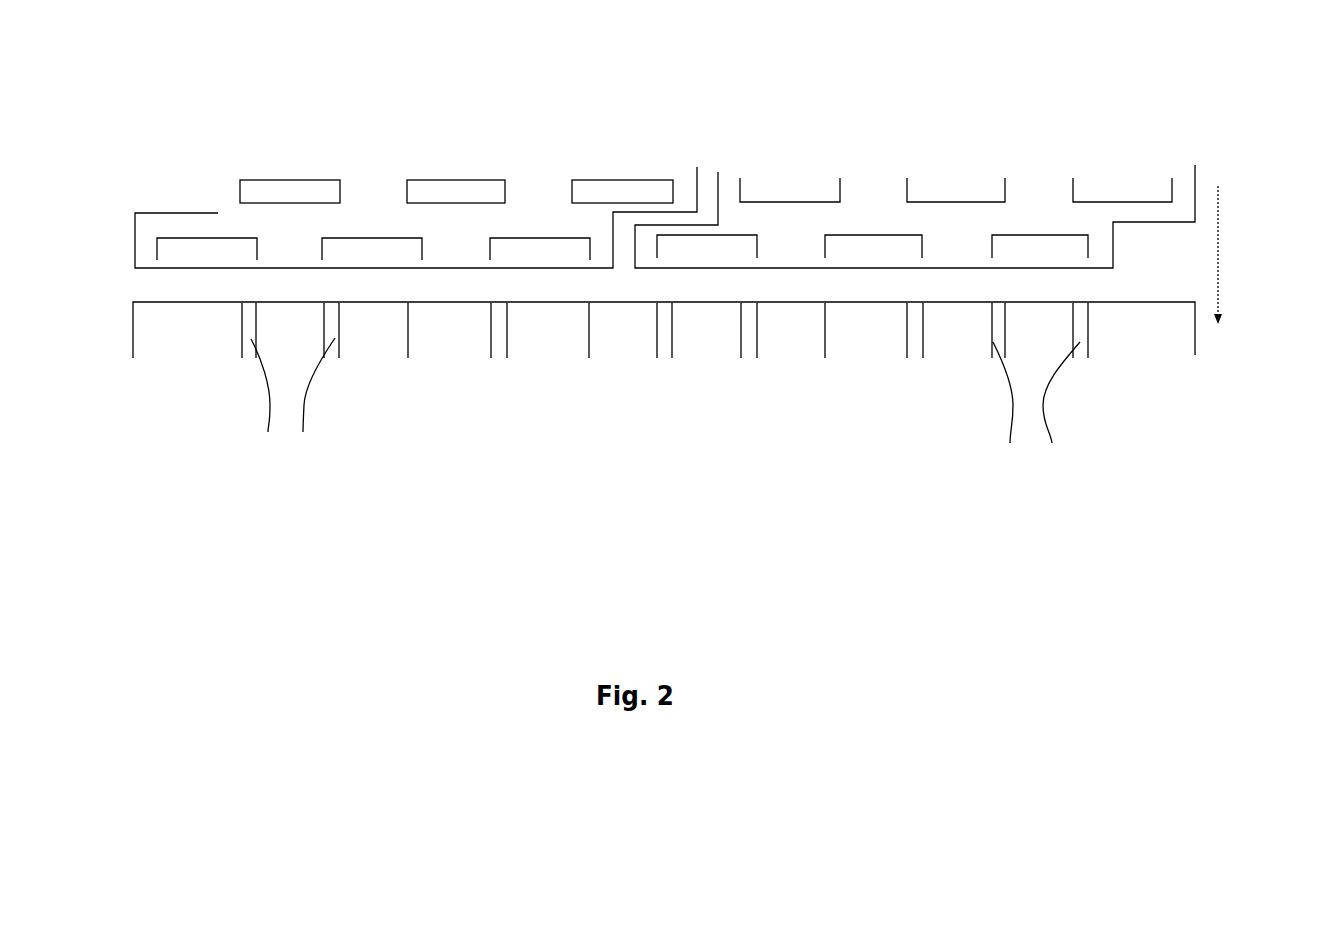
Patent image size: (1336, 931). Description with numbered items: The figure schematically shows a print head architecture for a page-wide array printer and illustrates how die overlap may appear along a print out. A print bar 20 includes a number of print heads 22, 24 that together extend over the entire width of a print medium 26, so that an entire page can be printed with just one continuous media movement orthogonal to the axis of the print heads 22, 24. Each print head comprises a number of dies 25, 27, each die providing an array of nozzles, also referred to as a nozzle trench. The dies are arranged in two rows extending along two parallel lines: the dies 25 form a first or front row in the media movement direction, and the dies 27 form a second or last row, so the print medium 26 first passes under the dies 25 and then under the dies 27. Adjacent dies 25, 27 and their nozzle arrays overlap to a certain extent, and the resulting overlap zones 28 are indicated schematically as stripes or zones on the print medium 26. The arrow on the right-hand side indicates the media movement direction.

The print bar 20 is at (183, 79).
The print head 22 is at (683, 185).
The print head 24 is at (1183, 183).
The dies 25 is at (267, 185).
The print medium 26 is at (1168, 353).
The dies 27 is at (170, 245).
The overlap zones 28 is at (665, 416).